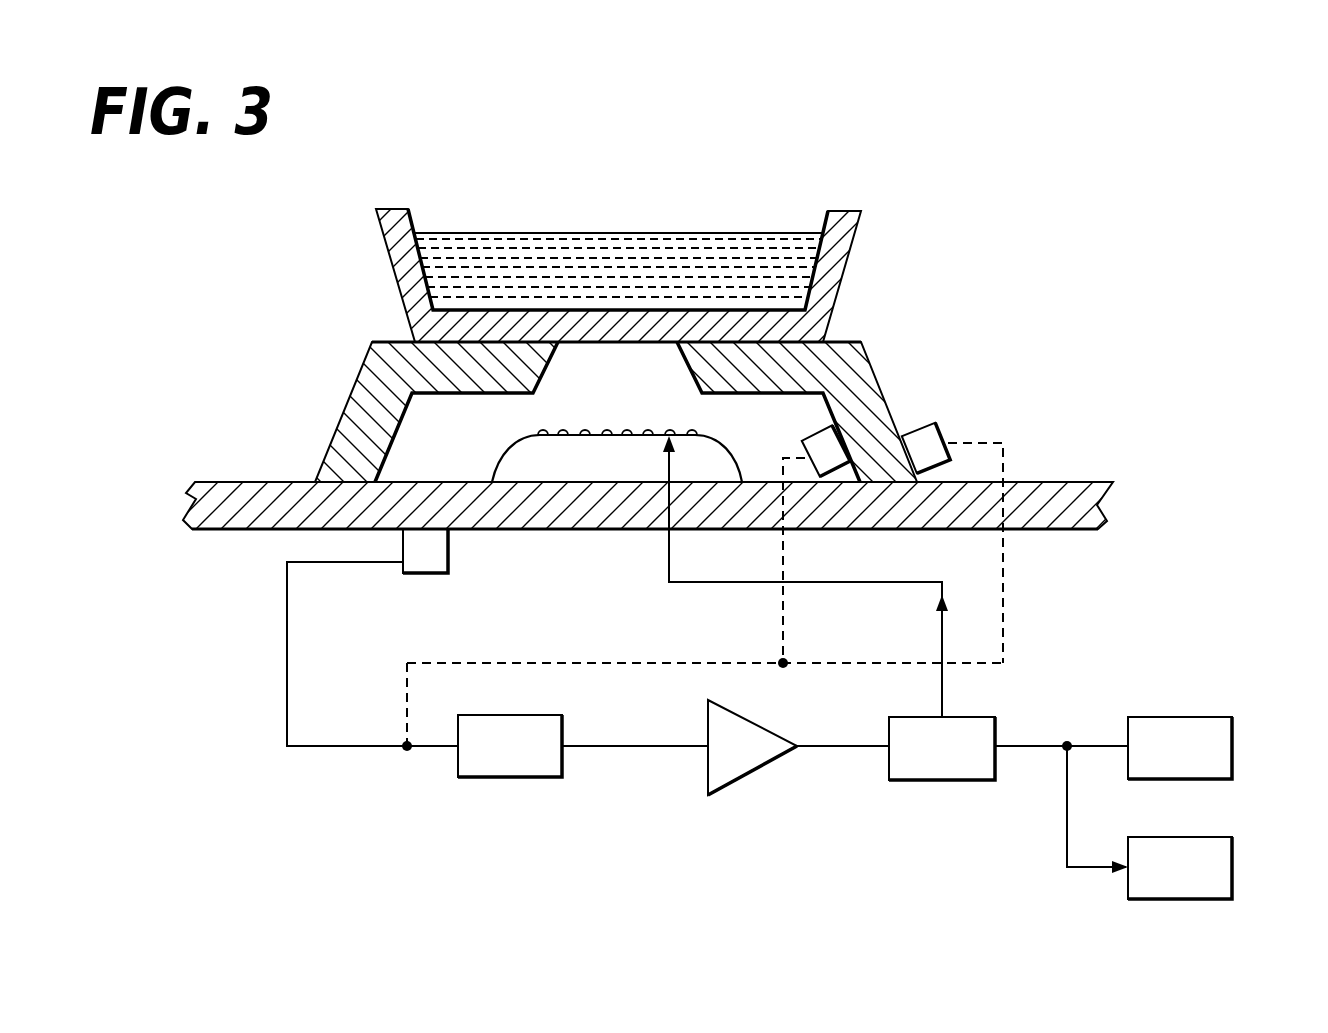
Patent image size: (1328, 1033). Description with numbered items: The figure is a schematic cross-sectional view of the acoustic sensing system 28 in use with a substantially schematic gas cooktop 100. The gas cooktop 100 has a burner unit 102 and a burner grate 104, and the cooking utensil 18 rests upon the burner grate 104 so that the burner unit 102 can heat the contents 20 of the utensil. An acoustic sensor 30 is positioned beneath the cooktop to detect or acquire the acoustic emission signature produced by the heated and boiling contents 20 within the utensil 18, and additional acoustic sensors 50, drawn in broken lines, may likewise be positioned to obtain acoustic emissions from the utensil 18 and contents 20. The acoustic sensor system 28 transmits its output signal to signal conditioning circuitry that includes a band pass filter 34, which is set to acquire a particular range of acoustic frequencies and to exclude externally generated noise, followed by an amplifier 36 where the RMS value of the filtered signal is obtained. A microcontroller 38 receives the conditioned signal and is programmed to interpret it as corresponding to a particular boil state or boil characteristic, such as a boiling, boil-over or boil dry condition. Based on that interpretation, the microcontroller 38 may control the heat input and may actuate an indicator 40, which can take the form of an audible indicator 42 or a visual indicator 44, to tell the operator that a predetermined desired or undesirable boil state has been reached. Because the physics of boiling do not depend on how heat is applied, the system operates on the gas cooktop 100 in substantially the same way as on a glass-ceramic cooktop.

The cooking utensil 18 is at (843, 238).
The contents 20 is at (645, 248).
The burner grate 104 is at (880, 383).
The burner unit 102 is at (507, 458).
The acoustic sensors 50 is at (820, 432).
The gas cooktop 100 is at (1024, 416).
The acoustic sensor system 28 is at (466, 589).
The acoustic sensor 30 is at (413, 575).
The band pass filter 34 is at (492, 762).
The amplifier 36 is at (719, 762).
The microcontroller 38 is at (925, 762).
The indicator 40 is at (1218, 763).
The audible indicator 42 is at (1162, 763).
The visual indicator 44 is at (1162, 883).